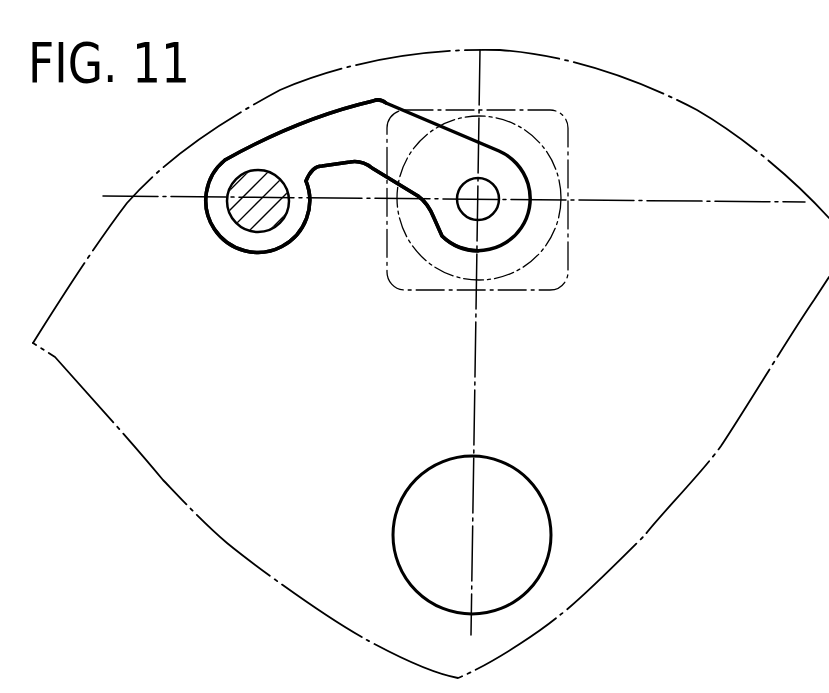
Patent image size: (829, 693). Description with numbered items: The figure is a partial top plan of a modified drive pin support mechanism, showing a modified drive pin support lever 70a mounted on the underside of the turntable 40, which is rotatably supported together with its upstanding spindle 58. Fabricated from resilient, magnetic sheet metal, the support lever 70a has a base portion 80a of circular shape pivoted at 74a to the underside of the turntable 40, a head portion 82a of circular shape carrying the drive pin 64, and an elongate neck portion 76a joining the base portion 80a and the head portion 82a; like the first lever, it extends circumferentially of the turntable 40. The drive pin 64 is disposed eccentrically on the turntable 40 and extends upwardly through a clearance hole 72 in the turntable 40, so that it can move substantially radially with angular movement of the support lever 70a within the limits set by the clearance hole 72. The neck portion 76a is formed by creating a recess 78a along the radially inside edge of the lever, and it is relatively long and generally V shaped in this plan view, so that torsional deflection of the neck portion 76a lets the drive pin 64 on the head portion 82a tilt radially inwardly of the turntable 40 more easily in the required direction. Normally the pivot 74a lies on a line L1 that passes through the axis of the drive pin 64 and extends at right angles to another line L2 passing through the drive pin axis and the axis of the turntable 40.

The turntable 40 is at (643, 535).
The spindle 58 is at (553, 533).
The drive pin 64 is at (440, 287).
The clearance hole 72 is at (568, 163).
The modified drive pin support lever 70a is at (357, 166).
The neck portion 76a is at (318, 116).
The recess 78a is at (342, 168).
The base portion 80a is at (218, 238).
The pivot 74a is at (266, 232).
The head portion 82a is at (440, 238).
The line L1 is at (617, 200).
The line L2 is at (480, 398).